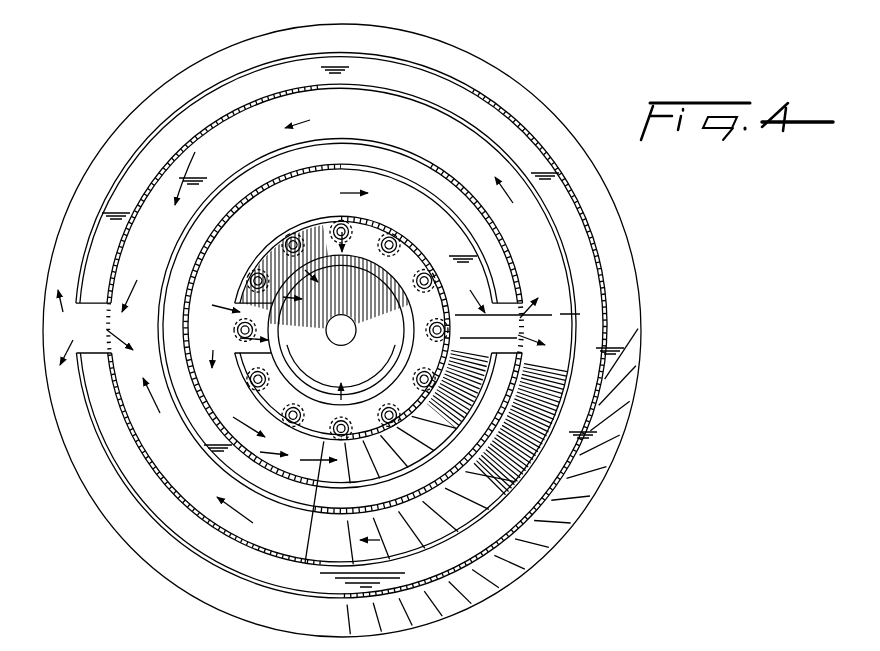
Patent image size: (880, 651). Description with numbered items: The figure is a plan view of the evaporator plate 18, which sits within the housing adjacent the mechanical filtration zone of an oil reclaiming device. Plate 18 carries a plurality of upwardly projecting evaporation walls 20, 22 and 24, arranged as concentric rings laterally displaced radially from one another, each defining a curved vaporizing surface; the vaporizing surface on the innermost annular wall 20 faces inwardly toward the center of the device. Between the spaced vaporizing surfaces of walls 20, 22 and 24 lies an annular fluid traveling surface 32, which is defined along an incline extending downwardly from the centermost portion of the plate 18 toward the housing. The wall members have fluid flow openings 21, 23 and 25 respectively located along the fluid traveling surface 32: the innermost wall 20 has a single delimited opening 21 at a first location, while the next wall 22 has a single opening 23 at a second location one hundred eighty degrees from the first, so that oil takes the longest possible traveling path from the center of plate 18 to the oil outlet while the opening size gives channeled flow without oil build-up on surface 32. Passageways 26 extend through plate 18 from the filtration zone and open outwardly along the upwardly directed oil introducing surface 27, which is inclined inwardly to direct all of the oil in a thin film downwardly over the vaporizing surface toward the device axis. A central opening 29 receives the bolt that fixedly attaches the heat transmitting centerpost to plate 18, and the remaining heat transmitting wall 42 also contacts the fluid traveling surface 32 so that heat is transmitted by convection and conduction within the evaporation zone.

The evaporator plate 18 is at (520, 78).
The innermost annular evaporation wall 20 is at (300, 437).
The fluid flow opening 21 is at (240, 355).
The annular evaporation wall member 22 is at (228, 457).
The fluid flow opening 23 is at (517, 338).
The evaporation wall 24 is at (137, 167).
The fluid flow opening 25 is at (95, 355).
The passageways 26 is at (368, 268).
The oil introducing surface 27 is at (367, 235).
The opening 29 is at (354, 335).
The fluid traveling surface 32 is at (463, 273).
The heat transmitting wall 42 is at (625, 650).